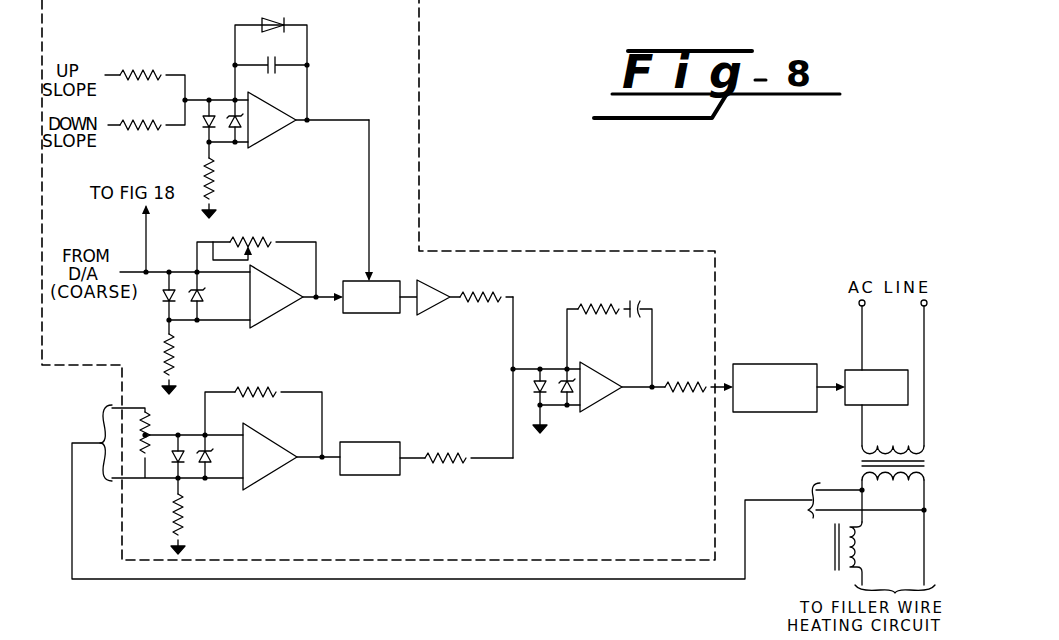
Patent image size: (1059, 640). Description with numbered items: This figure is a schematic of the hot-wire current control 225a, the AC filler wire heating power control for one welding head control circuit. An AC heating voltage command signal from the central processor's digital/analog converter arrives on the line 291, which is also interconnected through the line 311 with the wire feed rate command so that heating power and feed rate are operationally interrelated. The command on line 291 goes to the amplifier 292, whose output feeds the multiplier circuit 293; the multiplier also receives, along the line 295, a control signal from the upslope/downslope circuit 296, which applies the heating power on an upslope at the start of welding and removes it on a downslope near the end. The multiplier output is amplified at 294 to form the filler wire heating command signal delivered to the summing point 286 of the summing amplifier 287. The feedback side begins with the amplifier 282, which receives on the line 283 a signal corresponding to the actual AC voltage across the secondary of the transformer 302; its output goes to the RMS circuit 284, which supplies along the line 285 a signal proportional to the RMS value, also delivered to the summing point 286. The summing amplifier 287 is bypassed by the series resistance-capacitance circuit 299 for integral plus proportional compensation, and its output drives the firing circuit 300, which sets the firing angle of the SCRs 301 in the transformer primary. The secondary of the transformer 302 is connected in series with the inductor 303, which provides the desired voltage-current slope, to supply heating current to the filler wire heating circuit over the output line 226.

The hot-wire current control 225a is at (622, 231).
The output line to SCRs 226 is at (826, 395).
The amplifier 282 is at (276, 473).
The line 283 is at (72, 443).
The RMS circuit 284 is at (367, 441).
The line 285 is at (414, 465).
The summing point 286 is at (511, 373).
The summing amplifier 287 is at (604, 398).
The line 291 is at (136, 275).
The amplifier 292 is at (278, 311).
The multiplier circuit 293 is at (382, 316).
The amplifier 294 is at (441, 285).
The line 295 is at (371, 140).
The upslope/downslope circuit 296 is at (279, 152).
The series resistance-capacitance circuit 299 is at (632, 299).
The firing circuit 300 is at (780, 364).
The SCRs 301 is at (845, 370).
The transformer 302 is at (858, 465).
The inductor 303 is at (832, 553).
The line 311 is at (146, 233).